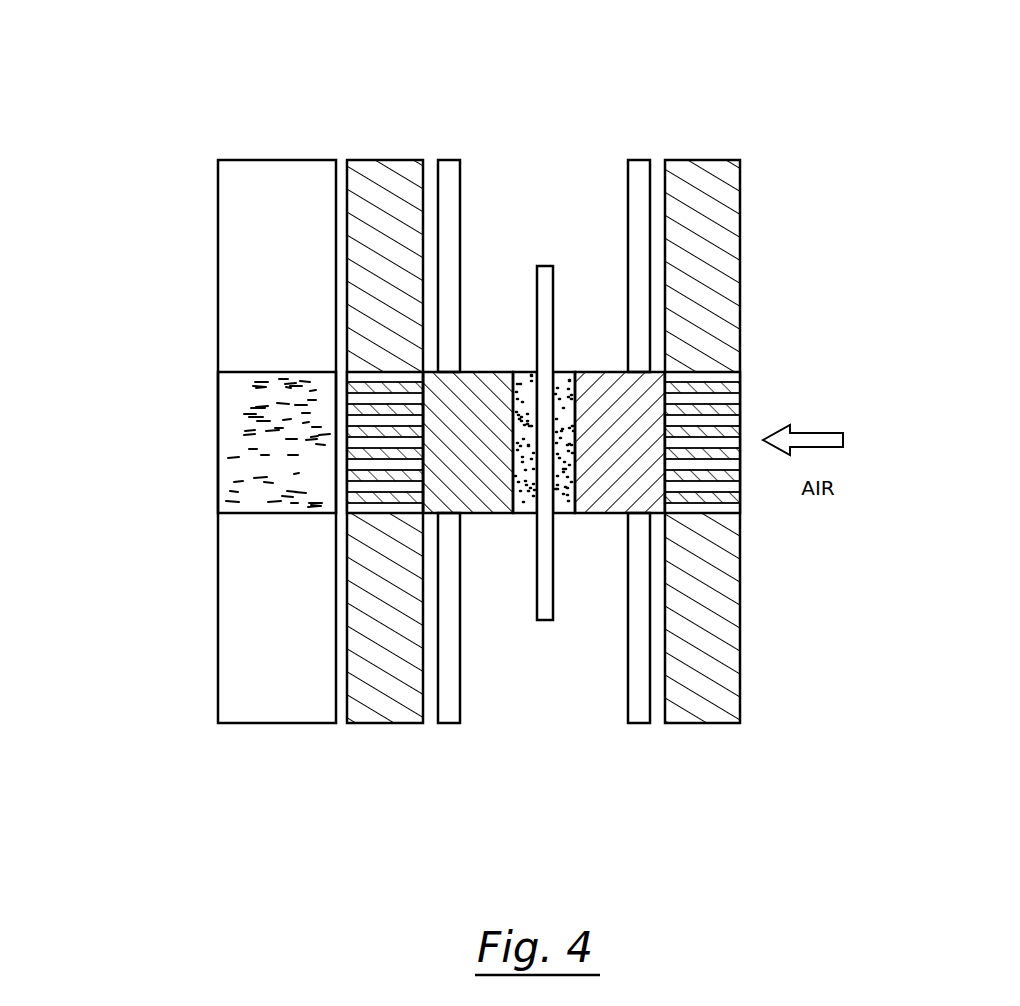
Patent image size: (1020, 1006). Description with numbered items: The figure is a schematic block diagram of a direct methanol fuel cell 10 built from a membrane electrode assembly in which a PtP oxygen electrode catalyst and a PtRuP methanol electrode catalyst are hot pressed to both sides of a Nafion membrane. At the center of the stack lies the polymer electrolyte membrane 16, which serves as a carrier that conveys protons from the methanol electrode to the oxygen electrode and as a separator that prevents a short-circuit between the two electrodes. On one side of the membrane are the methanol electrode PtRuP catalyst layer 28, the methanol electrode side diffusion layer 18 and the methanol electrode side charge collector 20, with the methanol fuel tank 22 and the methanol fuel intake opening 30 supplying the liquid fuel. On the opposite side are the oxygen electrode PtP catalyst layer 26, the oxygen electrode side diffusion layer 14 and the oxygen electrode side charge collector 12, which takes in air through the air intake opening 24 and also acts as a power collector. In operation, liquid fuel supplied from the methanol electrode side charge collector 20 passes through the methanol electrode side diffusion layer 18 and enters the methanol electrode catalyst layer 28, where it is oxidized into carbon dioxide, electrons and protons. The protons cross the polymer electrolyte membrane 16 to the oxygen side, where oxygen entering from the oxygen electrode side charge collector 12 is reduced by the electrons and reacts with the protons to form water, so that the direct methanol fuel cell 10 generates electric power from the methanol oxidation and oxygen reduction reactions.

The direct methanol fuel cell 10 is at (225, 118).
The oxygen electrode side charge collector 12 is at (700, 725).
The oxygen electrode side diffusion layer 14 is at (593, 513).
The polymer electrolyte membrane 16 is at (551, 266).
The methanol electrode side diffusion layer 18 is at (485, 513).
The methanol electrode side charge collector 20 is at (382, 725).
The methanol fuel tank 22 is at (237, 412).
The air intake opening 24 is at (720, 380).
The oxygen electrode PtP catalyst layer 26 is at (568, 372).
The methanol electrode PtRuP catalyst layer 28 is at (522, 372).
The methanol fuel intake opening 30 is at (360, 507).